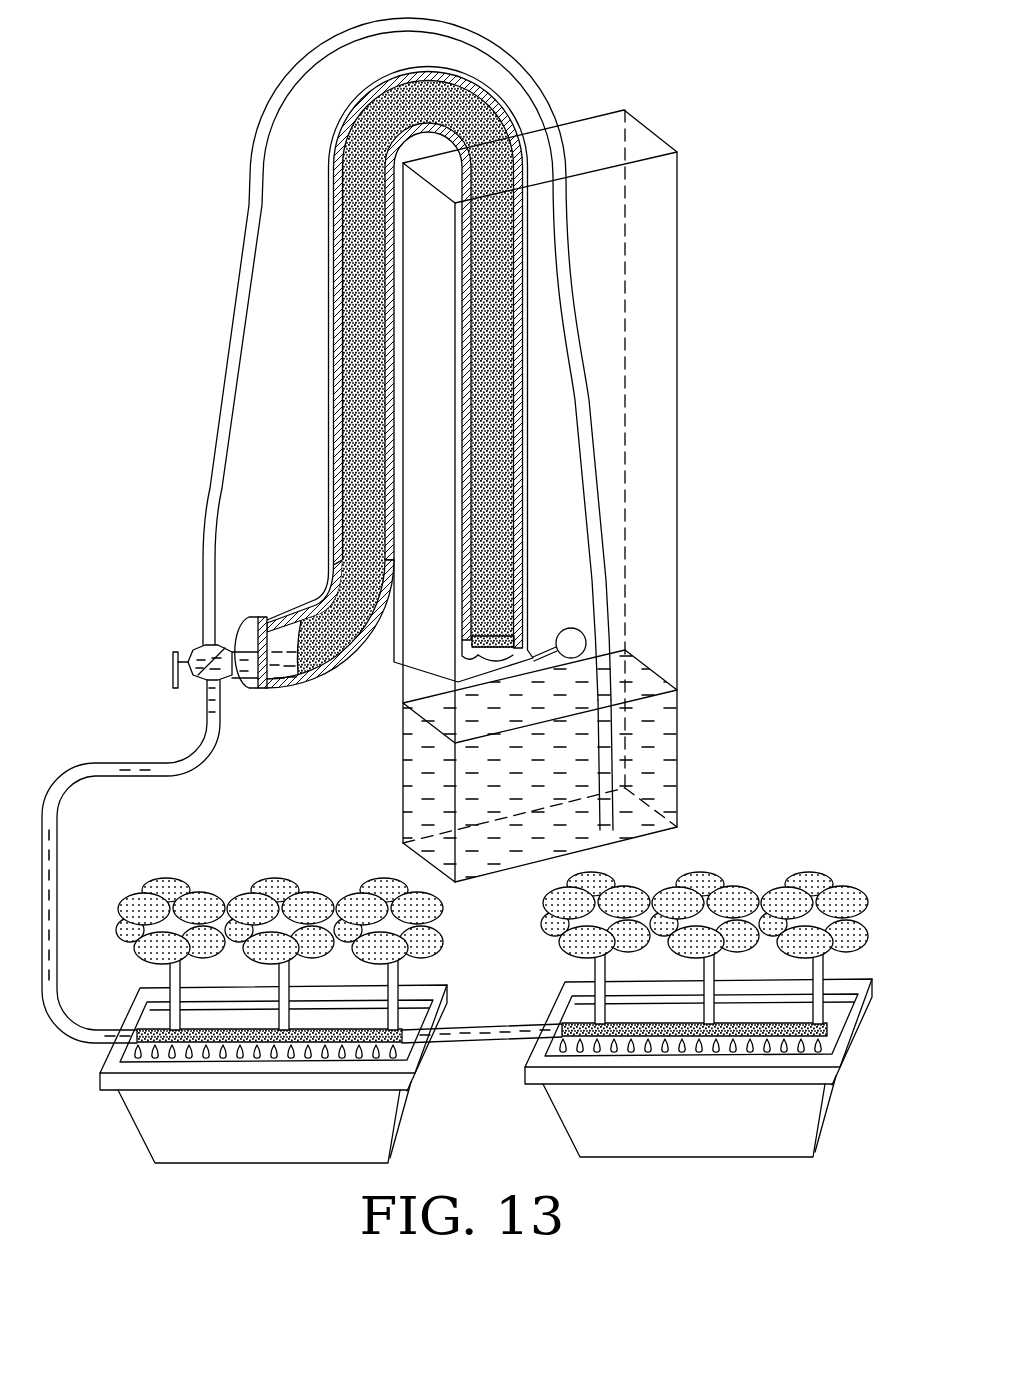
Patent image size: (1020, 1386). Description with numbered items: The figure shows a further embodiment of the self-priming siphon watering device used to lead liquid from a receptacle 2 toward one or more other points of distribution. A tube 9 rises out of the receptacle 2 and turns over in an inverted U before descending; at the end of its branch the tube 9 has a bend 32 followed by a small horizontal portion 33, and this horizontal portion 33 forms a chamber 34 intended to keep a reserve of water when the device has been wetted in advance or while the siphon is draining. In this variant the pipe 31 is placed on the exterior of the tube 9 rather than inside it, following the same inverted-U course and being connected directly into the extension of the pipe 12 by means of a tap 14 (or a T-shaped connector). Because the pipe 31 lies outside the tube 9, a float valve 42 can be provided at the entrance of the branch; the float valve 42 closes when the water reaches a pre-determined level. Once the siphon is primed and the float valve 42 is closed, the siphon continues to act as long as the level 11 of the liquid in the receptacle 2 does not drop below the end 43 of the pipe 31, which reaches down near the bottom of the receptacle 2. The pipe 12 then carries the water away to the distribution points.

The receptacle 2 is at (635, 447).
The tube 9 is at (452, 70).
The level 11 is at (637, 682).
The pipe 12 is at (128, 757).
The tap 14 is at (192, 643).
The pipe 31 is at (242, 212).
The bend 32 is at (322, 583).
The small horizontal portion 33 is at (290, 603).
The chamber 34 is at (282, 627).
The float valve 42 is at (583, 620).
The end 43 is at (617, 828).